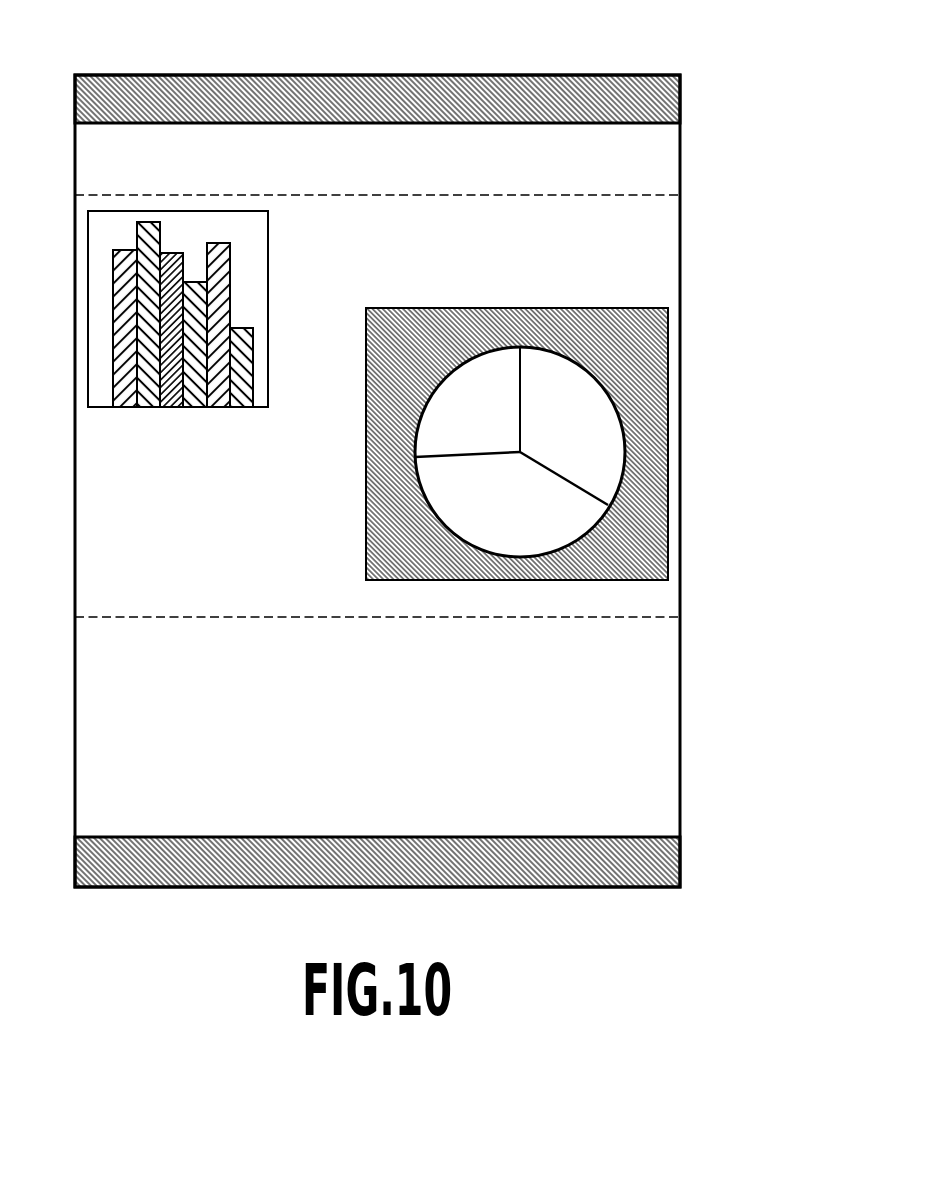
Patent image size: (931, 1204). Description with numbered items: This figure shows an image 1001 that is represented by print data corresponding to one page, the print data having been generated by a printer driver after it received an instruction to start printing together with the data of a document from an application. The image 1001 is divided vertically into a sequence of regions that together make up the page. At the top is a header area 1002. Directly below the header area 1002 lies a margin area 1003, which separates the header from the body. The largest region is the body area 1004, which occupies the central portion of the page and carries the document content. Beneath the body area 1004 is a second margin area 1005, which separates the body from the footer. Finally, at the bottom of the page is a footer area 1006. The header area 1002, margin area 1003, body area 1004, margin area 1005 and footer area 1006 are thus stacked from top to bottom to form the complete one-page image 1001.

The image 1001 is at (600, 75).
The header area 1002 is at (693, 76).
The margin area 1003 is at (693, 124).
The body area 1004 is at (693, 196).
The margin area 1005 is at (693, 618).
The footer area 1006 is at (693, 838).